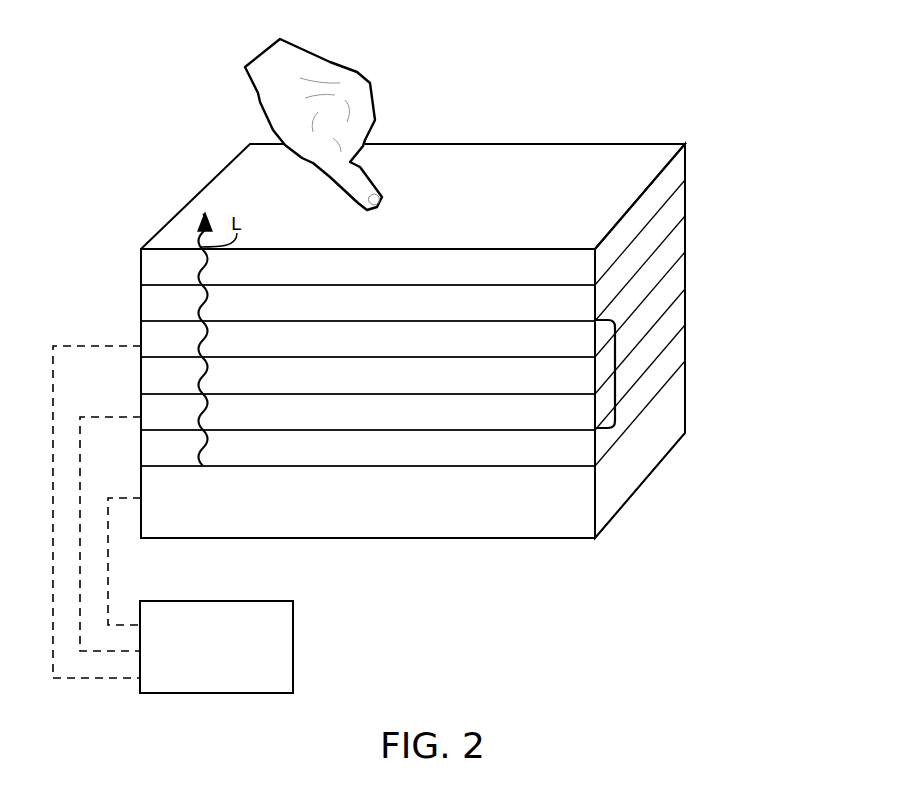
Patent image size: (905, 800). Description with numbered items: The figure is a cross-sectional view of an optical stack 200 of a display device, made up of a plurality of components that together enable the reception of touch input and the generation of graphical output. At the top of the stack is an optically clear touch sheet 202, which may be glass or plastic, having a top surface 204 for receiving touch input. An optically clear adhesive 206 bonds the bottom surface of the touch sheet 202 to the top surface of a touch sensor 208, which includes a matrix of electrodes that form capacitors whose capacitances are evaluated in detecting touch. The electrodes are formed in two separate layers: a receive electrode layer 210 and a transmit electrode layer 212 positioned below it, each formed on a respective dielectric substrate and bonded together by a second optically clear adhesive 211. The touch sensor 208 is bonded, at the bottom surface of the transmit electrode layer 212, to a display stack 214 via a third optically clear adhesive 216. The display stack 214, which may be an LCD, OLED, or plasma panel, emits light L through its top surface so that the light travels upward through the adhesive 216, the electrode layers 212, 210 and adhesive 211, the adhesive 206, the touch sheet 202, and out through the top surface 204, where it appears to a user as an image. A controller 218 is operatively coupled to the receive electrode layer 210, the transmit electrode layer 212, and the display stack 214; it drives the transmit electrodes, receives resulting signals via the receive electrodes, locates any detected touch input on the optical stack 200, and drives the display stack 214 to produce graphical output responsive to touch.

The optical stack 200 is at (491, 84).
The touch sheet 202 is at (460, 278).
The top surface 204 is at (560, 226).
The optically clear adhesive 206 is at (411, 314).
The touch sensor 208 is at (615, 373).
The receive electrode layer 210 is at (402, 350).
The second optically clear adhesive 211 is at (408, 388).
The transmit electrode layer 212 is at (402, 424).
The display stack 214 is at (464, 514).
The third optically clear adhesive 216 is at (411, 460).
The controller 218 is at (199, 670).